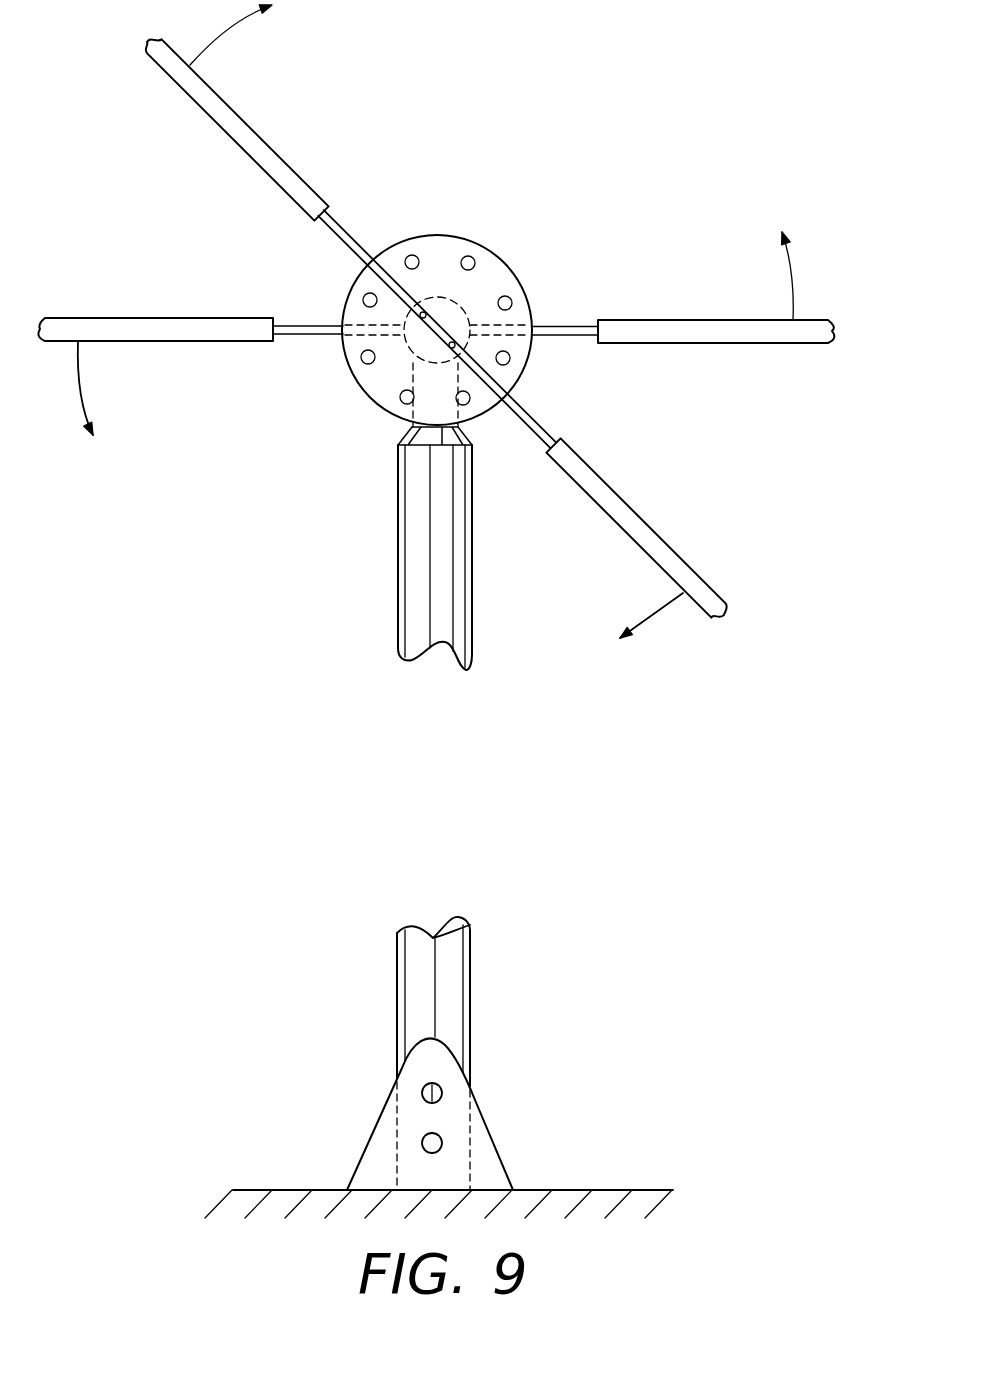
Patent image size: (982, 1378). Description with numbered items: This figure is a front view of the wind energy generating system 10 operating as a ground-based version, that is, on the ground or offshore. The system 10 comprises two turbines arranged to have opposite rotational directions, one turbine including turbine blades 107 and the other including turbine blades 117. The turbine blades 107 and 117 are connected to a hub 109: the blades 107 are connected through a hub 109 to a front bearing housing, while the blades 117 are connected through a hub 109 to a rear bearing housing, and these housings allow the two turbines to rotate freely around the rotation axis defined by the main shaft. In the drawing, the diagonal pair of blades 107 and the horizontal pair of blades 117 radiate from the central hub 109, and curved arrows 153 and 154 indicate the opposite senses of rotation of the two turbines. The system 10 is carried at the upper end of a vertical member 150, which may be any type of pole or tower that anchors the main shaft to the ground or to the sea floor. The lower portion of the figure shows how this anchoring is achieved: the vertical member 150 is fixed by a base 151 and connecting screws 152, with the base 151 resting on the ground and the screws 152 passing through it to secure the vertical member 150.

The wind energy generating system 10 is at (522, 198).
The turbine blades 107 is at (257, 128).
The hub 109 is at (533, 413).
The turbine blades 117 is at (115, 316).
The vertical member 150 is at (398, 603).
The base 151 is at (490, 1132).
The connecting screws 152 is at (423, 1090).
The rotation direction arrow 153 is at (650, 617).
The rotation direction arrow 154 is at (90, 413).